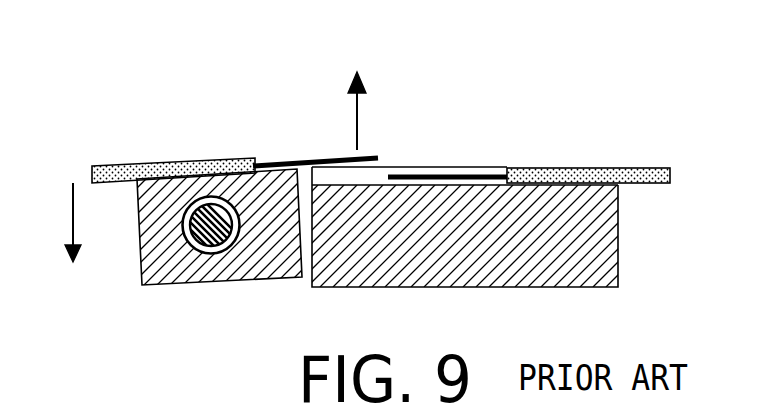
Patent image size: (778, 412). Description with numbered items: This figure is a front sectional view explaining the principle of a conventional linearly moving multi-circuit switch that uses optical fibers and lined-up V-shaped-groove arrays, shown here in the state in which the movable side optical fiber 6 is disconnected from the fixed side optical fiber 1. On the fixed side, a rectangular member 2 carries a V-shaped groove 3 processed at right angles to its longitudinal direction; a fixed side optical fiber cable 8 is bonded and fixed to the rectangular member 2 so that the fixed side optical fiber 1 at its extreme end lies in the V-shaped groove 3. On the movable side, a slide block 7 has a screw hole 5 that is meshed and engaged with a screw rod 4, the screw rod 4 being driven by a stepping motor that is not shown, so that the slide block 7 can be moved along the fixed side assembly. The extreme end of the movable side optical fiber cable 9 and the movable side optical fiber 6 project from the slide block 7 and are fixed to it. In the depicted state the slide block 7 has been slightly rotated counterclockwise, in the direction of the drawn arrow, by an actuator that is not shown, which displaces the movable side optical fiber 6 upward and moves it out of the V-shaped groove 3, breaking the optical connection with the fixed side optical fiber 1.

The fixed side optical fiber 1 is at (490, 172).
The rectangular member 2 is at (528, 268).
The V-shaped groove 3 is at (375, 177).
The screw rod 4 is at (233, 243).
The screw hole 5 is at (203, 250).
The movable side optical fiber 6 is at (330, 158).
The slide block 7 is at (142, 258).
The fixed side optical fiber cable 8 is at (640, 173).
The movable side optical fiber cable 9 is at (137, 163).